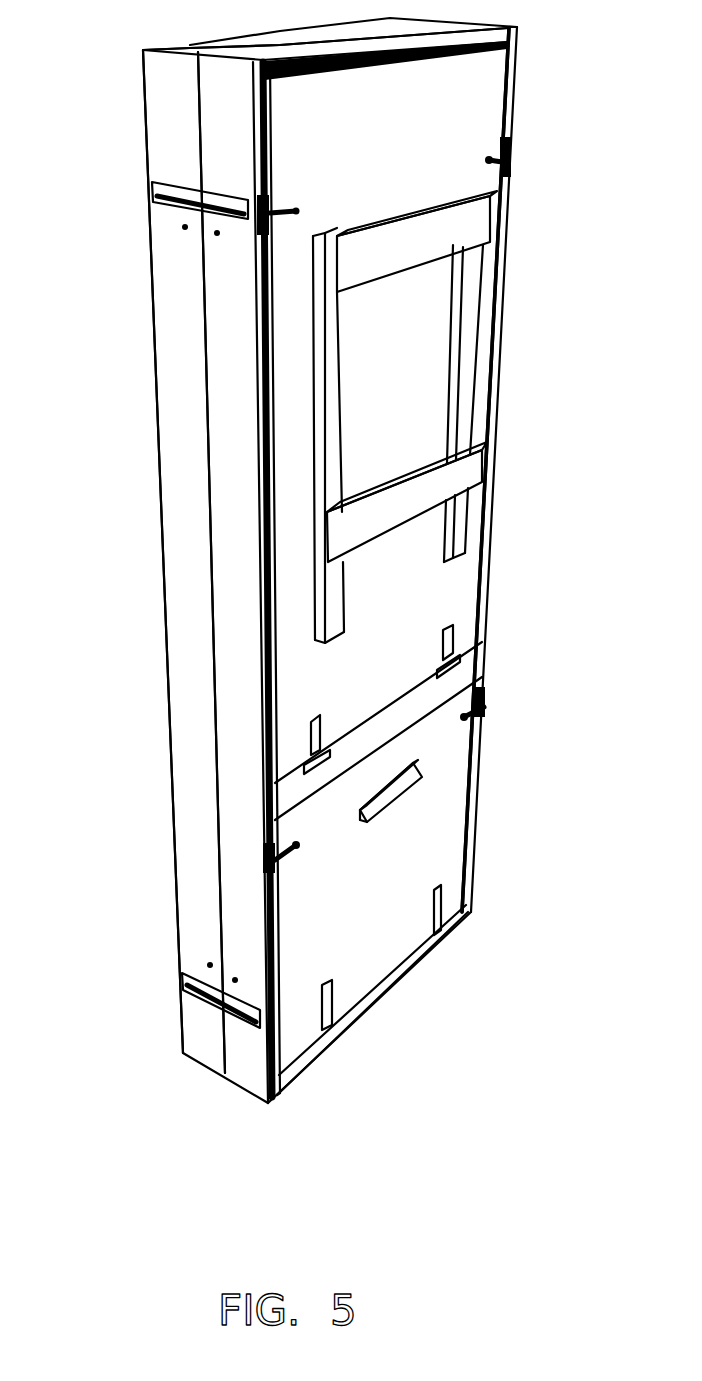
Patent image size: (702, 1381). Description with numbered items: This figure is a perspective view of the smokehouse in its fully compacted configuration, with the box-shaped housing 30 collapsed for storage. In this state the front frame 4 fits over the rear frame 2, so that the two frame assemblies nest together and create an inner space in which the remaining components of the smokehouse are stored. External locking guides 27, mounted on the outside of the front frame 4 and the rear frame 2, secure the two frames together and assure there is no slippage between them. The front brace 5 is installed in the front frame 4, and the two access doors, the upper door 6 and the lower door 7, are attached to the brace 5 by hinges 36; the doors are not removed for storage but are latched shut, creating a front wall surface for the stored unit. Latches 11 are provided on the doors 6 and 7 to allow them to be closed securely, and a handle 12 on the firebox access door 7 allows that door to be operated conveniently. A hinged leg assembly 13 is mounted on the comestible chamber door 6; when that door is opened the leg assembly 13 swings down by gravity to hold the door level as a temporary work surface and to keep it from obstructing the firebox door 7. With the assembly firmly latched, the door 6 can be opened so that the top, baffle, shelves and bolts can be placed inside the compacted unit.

The rear frame 2 is at (163, 115).
The front frame 4 is at (235, 490).
The front brace 5 is at (418, 716).
The upper door 6 is at (463, 800).
The lower door 7 is at (518, 470).
The latches 11 is at (435, 514).
The handle 12 is at (406, 817).
The hinged leg assembly 13 is at (454, 417).
The external locking guides 27 is at (152, 190).
The housing 30 is at (138, 33).
The hinges 36 is at (445, 816).